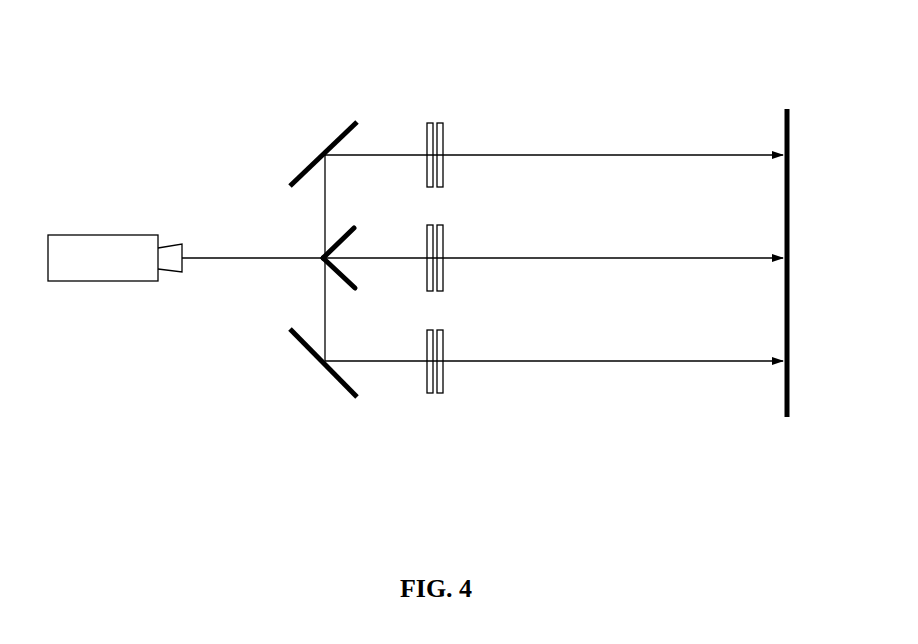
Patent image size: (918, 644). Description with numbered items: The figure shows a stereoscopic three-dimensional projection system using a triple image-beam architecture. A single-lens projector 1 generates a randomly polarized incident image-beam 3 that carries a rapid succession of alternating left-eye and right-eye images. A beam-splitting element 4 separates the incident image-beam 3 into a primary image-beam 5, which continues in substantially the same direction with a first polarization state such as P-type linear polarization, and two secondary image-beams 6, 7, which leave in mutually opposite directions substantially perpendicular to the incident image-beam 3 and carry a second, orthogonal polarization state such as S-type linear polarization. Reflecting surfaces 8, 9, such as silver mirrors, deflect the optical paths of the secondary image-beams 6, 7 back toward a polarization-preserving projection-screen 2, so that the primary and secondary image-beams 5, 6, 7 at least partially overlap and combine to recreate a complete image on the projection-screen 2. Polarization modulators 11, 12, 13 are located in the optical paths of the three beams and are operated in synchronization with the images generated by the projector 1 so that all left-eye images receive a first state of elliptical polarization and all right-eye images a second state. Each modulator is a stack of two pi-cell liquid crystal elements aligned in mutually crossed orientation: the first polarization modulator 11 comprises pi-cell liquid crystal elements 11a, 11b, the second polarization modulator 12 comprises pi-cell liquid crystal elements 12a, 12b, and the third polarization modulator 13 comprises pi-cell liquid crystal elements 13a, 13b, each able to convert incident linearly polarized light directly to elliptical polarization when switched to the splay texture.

The single-lens projector 1 is at (86, 229).
The polarization-preserving projection-screen 2 is at (797, 129).
The incident image-beam 3 is at (212, 254).
The beam-splitting element 4 is at (333, 273).
The primary image-beam 5 is at (390, 255).
The secondary image-beam 6 is at (320, 221).
The secondary image-beam 7 is at (320, 293).
The reflecting surface 8 is at (297, 173).
The reflecting surface 9 is at (296, 347).
The first polarization modulator 11 is at (436, 107).
The pi-cell liquid crystal element 11a is at (424, 131).
The pi-cell liquid crystal element 11b is at (466, 134).
The second polarization modulator 12 is at (509, 238).
The pi-cell liquid crystal element 12a is at (433, 221).
The pi-cell liquid crystal element 12b is at (447, 251).
The third polarization modulator 13 is at (437, 409).
The pi-cell liquid crystal element 13a is at (424, 386).
The pi-cell liquid crystal element 13b is at (466, 384).